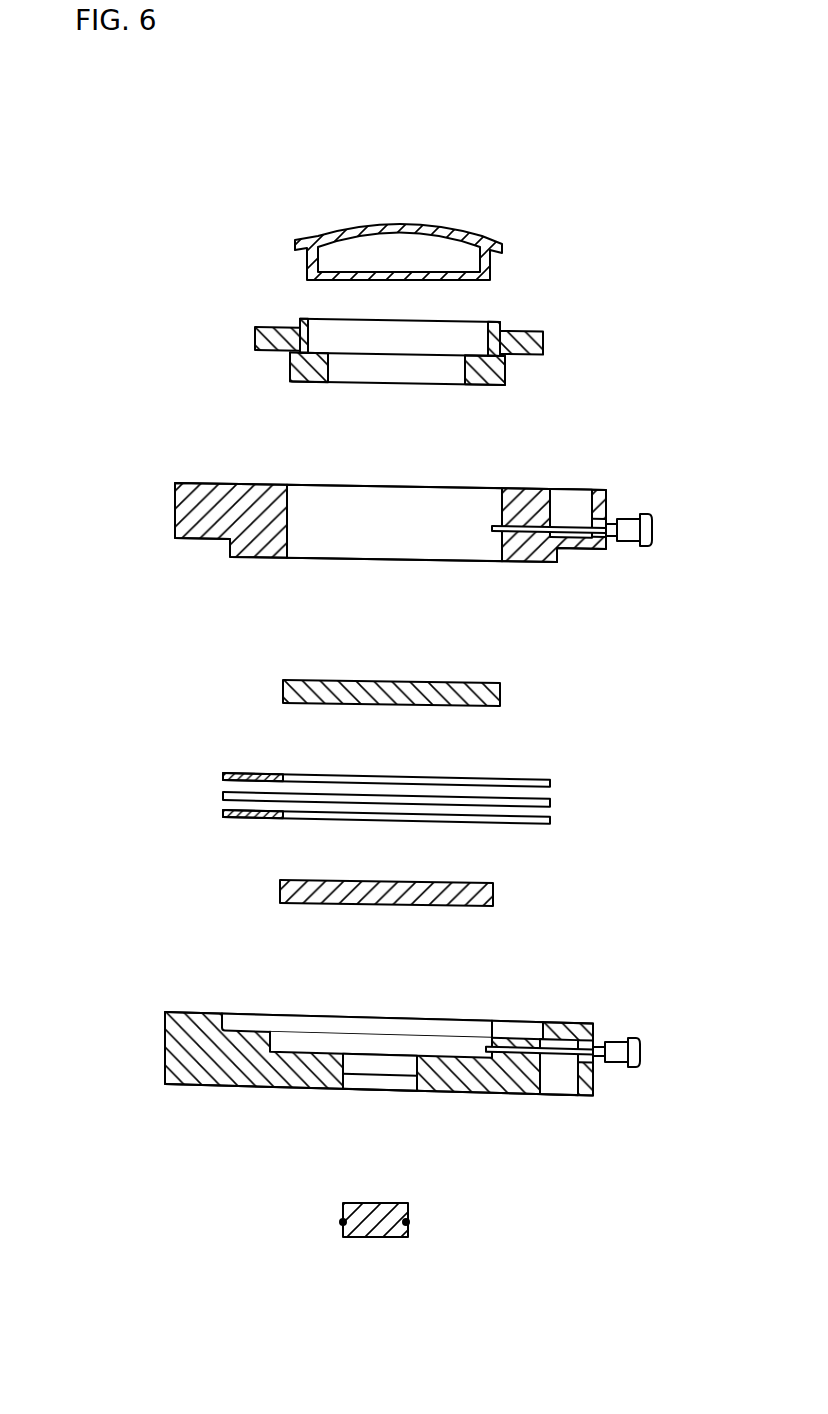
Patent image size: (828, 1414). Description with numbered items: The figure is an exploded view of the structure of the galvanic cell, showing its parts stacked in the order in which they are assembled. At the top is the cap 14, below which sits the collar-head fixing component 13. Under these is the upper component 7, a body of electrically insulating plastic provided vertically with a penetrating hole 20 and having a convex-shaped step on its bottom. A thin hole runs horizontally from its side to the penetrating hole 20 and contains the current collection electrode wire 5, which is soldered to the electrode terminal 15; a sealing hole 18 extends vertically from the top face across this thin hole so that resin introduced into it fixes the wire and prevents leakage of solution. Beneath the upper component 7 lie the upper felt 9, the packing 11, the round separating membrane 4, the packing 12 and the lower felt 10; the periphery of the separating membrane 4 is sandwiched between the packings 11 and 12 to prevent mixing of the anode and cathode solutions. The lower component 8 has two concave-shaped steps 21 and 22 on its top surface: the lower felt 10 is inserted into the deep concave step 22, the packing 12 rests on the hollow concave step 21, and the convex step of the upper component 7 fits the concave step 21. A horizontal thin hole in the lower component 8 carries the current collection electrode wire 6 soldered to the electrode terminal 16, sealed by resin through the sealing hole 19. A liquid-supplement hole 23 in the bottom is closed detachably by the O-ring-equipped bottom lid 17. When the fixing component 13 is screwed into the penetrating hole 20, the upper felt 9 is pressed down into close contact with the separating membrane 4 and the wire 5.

The separating membrane 4 is at (386, 795).
The current collection electrode wire 5 is at (497, 533).
The current collection electrode wire 6 is at (495, 1020).
The upper component 7 is at (377, 515).
The lower component 8 is at (336, 1061).
The upper felt 9 is at (283, 693).
The lower felt 10 is at (278, 893).
The packing 11 is at (553, 782).
The packing 12 is at (552, 820).
The fixing component 13 is at (258, 327).
The cap 14 is at (316, 236).
The electrode terminal 15 is at (652, 527).
The electrode terminal 16 is at (638, 1048).
The bottom lid 17 is at (392, 1237).
The sealing hole 18 is at (575, 500).
The sealing hole 19 is at (565, 1085).
The penetrating hole 20 is at (312, 545).
The concave part 21 is at (237, 1018).
The concave part 22 is at (308, 1040).
The liquid-supplement hole 23 is at (357, 1085).